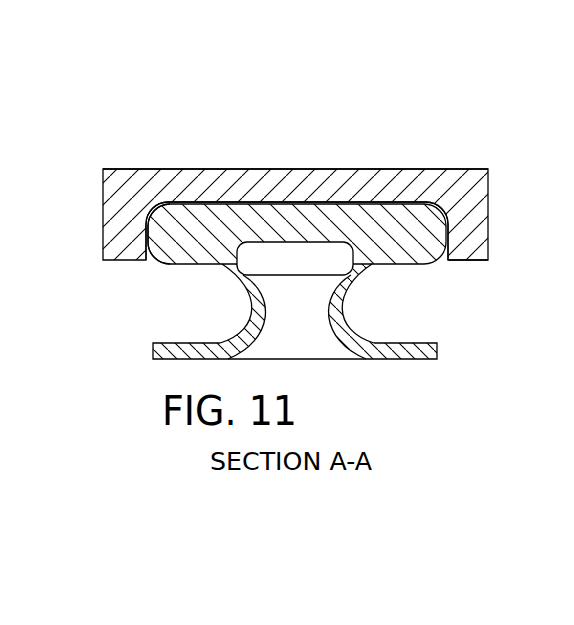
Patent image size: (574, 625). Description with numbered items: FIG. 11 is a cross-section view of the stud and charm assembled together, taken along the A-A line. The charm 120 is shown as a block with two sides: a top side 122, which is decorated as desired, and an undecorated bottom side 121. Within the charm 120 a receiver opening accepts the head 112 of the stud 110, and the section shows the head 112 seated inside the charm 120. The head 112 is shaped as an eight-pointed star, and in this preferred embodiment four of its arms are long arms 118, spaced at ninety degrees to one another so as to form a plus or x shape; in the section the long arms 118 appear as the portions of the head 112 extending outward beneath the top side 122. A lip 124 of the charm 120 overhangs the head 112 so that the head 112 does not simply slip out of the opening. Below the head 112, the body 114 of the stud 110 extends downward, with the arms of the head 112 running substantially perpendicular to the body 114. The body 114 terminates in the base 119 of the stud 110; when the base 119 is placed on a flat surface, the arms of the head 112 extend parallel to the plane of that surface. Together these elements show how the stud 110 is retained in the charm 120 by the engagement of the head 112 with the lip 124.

The stud 110 is at (347, 320).
The head 112 is at (300, 212).
The body 114 is at (243, 323).
The long arms 118 is at (170, 250).
The base 119 is at (418, 360).
The charm 120 is at (475, 183).
The bottom side 121 is at (478, 262).
The top side 122 is at (352, 169).
The lip 124 is at (445, 255).